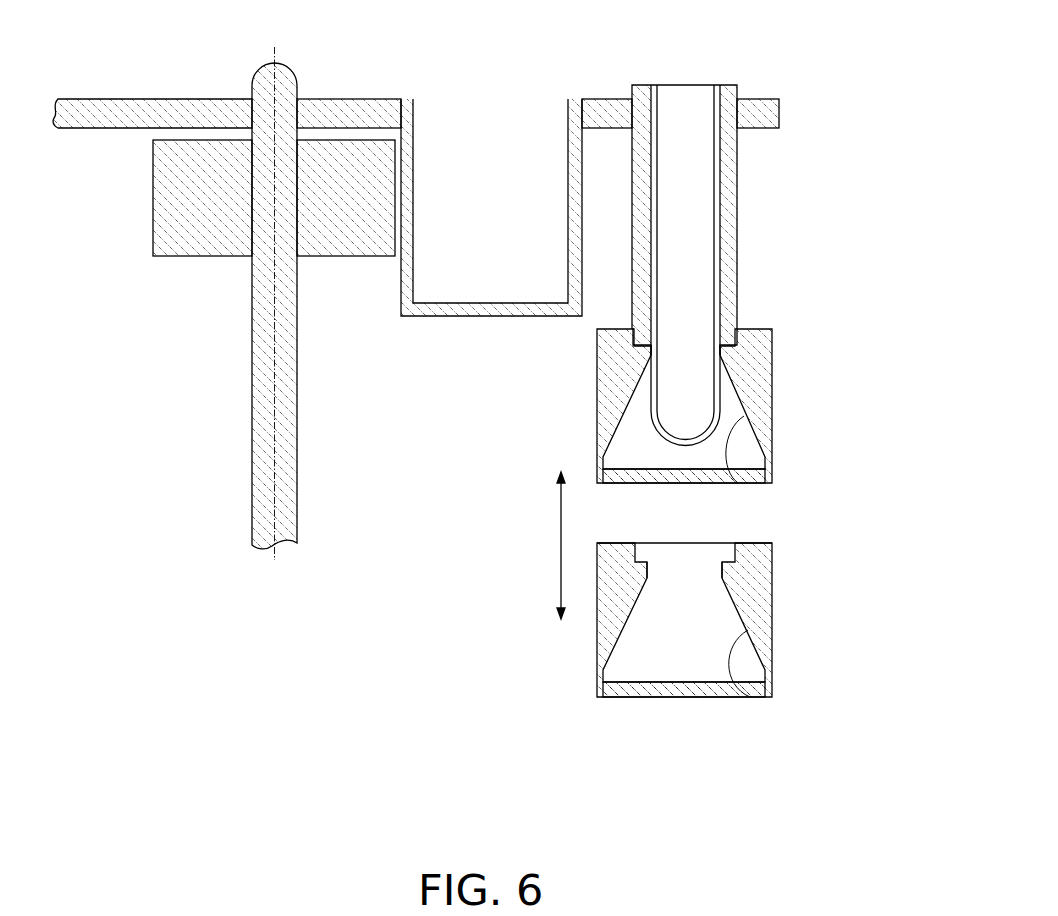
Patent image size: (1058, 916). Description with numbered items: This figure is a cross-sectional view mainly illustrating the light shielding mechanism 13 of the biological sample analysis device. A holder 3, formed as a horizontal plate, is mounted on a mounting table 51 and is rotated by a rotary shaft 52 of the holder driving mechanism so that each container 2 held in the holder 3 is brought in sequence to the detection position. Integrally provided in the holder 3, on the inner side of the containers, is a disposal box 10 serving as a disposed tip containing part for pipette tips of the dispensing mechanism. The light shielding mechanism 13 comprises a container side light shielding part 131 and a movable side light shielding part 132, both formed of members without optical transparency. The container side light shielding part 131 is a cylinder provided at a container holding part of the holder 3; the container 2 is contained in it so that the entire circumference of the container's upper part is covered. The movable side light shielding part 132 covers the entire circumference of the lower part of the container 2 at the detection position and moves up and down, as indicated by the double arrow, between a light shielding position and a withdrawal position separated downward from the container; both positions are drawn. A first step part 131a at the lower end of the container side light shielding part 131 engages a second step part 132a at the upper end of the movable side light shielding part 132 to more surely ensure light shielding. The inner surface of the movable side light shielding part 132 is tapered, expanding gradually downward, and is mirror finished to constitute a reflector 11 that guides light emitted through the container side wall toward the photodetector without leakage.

The holder 3 is at (190, 97).
The container 2 is at (686, 84).
The mounting table 51 is at (153, 204).
The rotary shaft 52 is at (252, 325).
The disposal box 10 is at (505, 235).
The light shielding mechanism 13 is at (832, 256).
The container side light shielding part 131 is at (739, 208).
The first step part 131a is at (739, 334).
The movable side light shielding part 132 is at (764, 423).
The second step part 132a is at (732, 349).
The reflector 11 is at (771, 482).